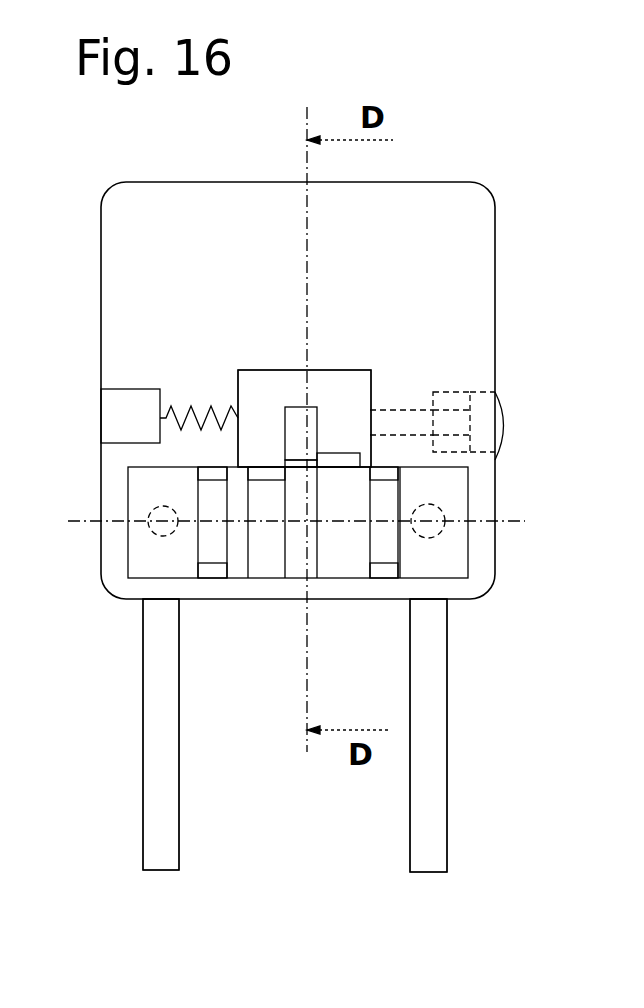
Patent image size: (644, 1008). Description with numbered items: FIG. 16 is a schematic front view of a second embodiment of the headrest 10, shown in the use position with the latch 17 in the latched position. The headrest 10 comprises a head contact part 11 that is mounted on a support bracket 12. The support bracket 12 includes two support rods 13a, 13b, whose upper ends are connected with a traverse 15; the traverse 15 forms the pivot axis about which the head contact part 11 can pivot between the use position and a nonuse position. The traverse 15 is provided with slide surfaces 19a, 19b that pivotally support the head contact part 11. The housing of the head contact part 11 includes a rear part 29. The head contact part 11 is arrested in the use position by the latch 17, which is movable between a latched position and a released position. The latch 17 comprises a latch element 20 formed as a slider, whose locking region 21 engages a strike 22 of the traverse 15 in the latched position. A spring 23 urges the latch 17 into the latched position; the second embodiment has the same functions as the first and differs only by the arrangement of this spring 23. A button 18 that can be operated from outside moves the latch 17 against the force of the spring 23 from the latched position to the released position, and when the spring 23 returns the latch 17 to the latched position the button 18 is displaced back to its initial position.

The headrest 10 is at (470, 156).
The head contact part 11 is at (472, 226).
The support bracket 12 is at (153, 835).
The support rod 13a is at (160, 771).
The support rod 13b is at (428, 797).
The traverse 15 is at (145, 548).
The latch 17 is at (327, 363).
The button 18 is at (402, 410).
The slide surface 19a is at (212, 548).
The slide surface 19b is at (362, 568).
The latch element 20 is at (262, 388).
The locking region 21 is at (295, 473).
The strike 22 is at (313, 484).
The spring 23 is at (212, 410).
The rear part 29 is at (465, 283).